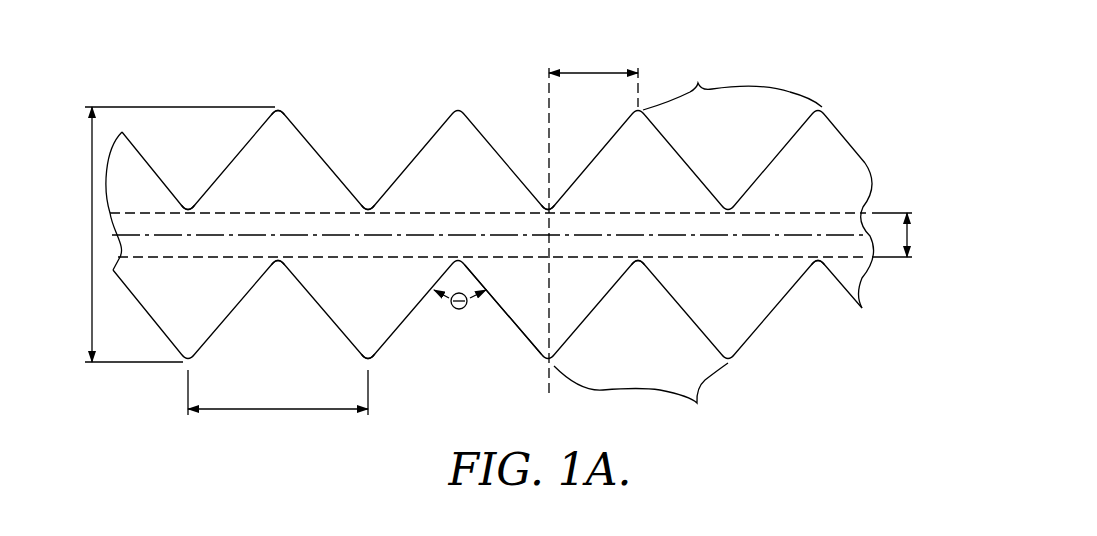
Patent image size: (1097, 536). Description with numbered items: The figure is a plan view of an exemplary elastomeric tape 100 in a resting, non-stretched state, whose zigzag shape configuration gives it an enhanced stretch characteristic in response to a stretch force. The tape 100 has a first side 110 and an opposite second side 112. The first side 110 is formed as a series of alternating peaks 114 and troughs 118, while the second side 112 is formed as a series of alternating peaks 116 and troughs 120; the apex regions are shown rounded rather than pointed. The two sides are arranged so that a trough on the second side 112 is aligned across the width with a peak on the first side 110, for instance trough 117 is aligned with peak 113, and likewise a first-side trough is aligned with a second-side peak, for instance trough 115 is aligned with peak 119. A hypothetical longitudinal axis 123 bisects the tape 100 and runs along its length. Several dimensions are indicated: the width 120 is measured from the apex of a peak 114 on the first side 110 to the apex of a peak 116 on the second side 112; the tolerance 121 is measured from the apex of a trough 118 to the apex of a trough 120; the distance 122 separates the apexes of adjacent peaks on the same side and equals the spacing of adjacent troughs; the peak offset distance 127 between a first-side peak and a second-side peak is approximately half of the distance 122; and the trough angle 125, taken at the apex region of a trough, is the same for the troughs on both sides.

The elastomeric tape 100 is at (502, 225).
The first side 110 is at (905, 133).
The second side 112 is at (838, 392).
The peak 113 is at (287, 105).
The peaks 114 is at (732, 84).
The trough 115 is at (366, 211).
The peaks 116 is at (646, 397).
The trough 117 is at (274, 263).
The troughs 118 is at (186, 210).
The peak 119 is at (373, 364).
The troughs / width 120 is at (92, 233).
The tolerance 121 is at (907, 237).
The distance between adjacent peaks 122 is at (277, 412).
The longitudinal axis 123 is at (772, 233).
The trough angle 125 is at (470, 329).
The peak offset distance 127 is at (593, 73).